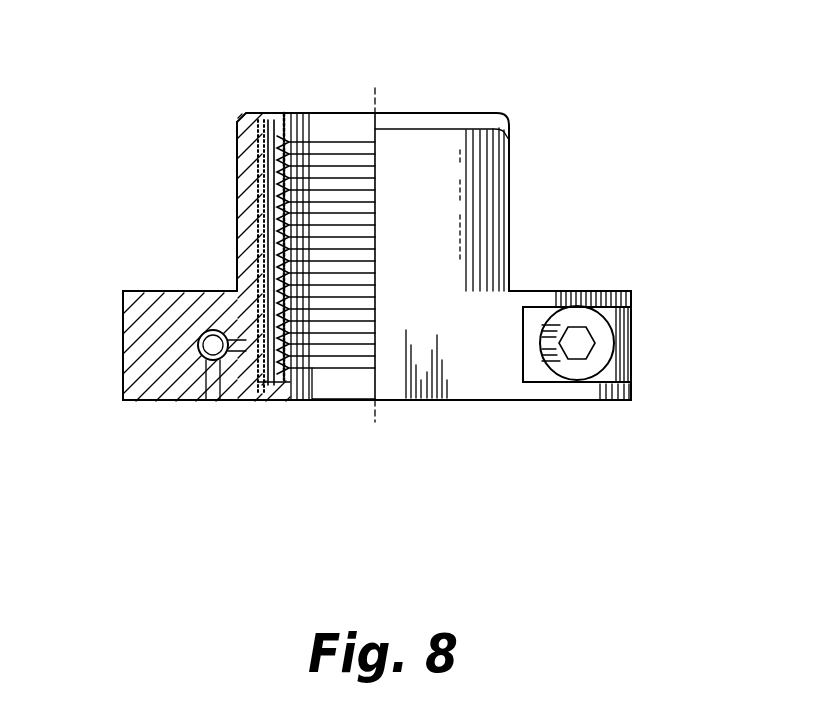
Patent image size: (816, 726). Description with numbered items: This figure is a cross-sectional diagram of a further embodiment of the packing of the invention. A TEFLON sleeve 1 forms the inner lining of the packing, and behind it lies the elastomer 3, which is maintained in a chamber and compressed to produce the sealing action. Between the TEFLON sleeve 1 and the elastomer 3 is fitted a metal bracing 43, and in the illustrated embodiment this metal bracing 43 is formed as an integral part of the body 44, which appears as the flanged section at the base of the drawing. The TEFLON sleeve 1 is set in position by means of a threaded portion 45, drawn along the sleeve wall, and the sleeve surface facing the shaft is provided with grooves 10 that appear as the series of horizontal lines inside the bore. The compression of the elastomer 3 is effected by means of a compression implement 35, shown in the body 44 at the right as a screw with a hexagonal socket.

The packing sleeve 1 is at (313, 113).
The elastomer 3 is at (245, 207).
The internal thread grooves 10 is at (308, 188).
The compression implement 35 is at (598, 332).
The metal bracing 43 is at (255, 167).
The body 44 is at (143, 360).
The threaded portion 45 is at (282, 113).